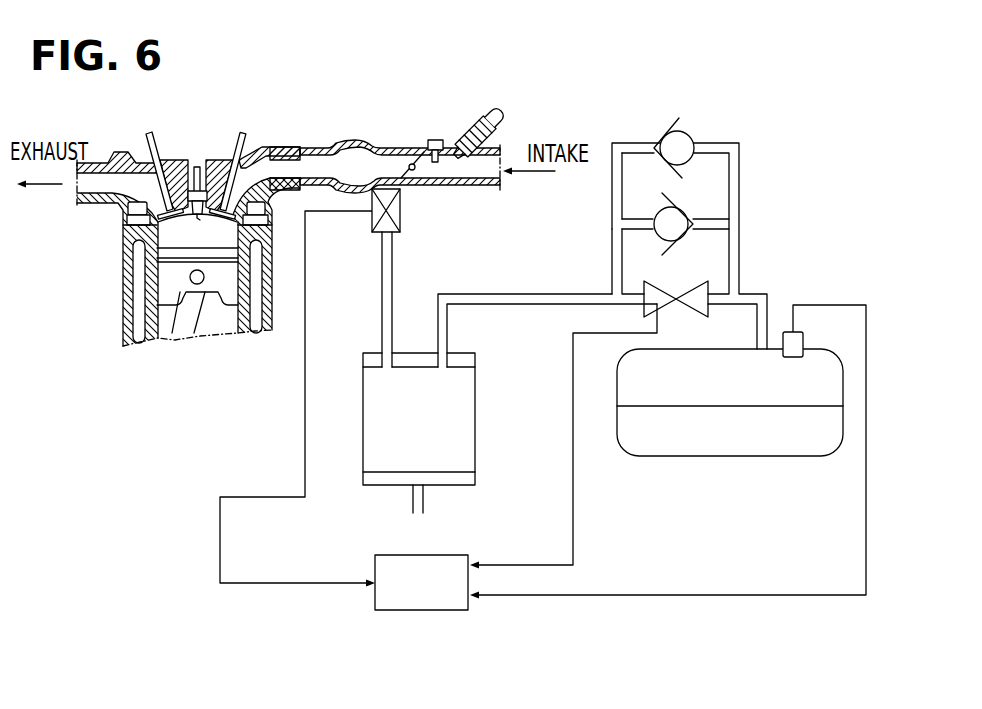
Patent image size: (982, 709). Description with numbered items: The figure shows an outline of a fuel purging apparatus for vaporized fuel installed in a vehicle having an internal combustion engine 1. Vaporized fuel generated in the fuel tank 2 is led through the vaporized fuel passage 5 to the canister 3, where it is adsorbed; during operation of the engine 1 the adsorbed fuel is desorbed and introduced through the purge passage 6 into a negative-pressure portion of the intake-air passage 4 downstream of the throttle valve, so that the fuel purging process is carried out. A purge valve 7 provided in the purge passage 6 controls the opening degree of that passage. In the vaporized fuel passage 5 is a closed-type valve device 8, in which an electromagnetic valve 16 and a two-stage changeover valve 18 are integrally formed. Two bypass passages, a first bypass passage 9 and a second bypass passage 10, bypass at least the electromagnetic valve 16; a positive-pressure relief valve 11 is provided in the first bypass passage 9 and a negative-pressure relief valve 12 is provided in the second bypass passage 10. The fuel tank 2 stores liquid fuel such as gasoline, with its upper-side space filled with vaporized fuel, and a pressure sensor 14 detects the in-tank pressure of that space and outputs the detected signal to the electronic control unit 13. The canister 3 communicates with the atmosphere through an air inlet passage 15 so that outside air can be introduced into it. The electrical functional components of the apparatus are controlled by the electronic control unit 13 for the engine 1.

The internal combustion engine 1 is at (96, 341).
The fuel tank 2 is at (713, 458).
The canister 3 is at (463, 430).
The intake-air passage 4 is at (386, 165).
The vaporized fuel passage 5 is at (500, 296).
The purge passage 6 is at (381, 291).
The purge valve 7 is at (395, 209).
The closed-type valve device 8 is at (755, 270).
The first bypass passage 9 is at (628, 232).
The second bypass passage 10 is at (638, 143).
The positive-pressure relief valve 11 is at (676, 218).
The negative-pressure relief valve 12 is at (681, 141).
The electronic control unit 13 is at (418, 612).
The pressure sensor 14 is at (800, 344).
The air inlet passage 15 is at (426, 500).
The electromagnetic valve 16 is at (660, 299).
The two-stage changeover valve 18 is at (697, 290).